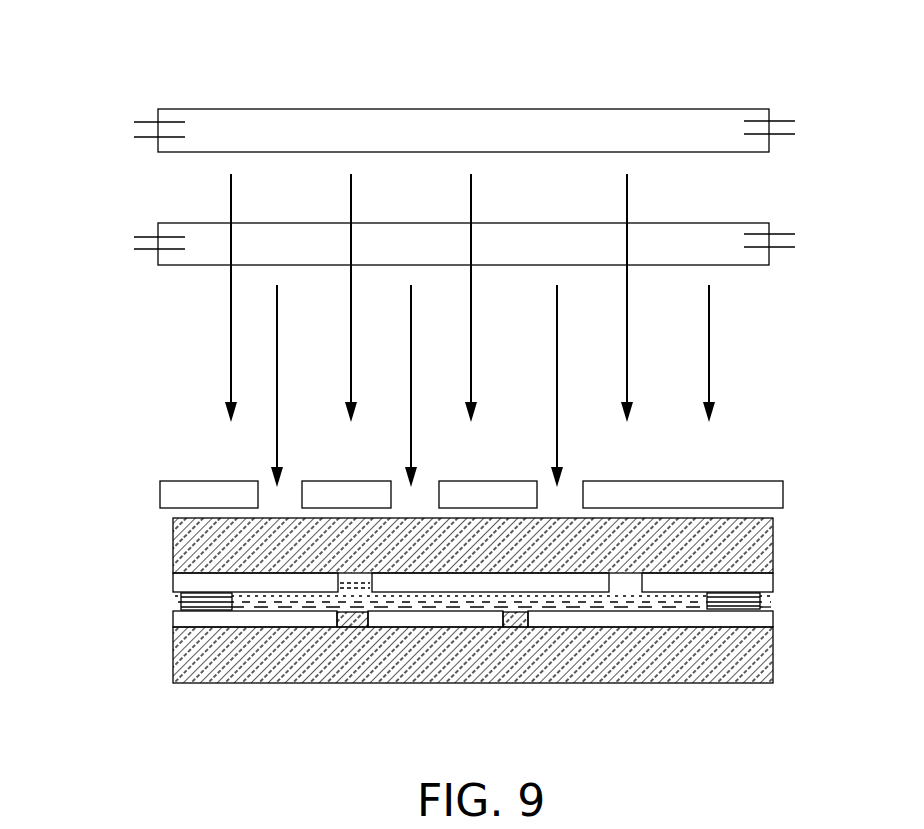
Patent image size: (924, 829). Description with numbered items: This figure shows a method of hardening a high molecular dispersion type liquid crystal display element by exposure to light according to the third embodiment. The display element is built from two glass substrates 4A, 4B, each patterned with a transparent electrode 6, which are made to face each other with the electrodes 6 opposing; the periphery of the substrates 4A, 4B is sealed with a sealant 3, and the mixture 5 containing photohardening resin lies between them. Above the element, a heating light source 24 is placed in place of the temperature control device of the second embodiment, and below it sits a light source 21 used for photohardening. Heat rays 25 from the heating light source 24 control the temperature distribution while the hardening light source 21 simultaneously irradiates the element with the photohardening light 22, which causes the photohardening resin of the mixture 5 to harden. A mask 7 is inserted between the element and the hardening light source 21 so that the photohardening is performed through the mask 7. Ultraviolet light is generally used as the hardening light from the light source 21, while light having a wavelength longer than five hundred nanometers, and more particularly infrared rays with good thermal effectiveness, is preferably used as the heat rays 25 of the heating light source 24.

The heating light source 24 is at (213, 109).
The light source 21 is at (757, 223).
The heat rays 25 is at (230, 202).
The light 22 is at (709, 343).
The mask 7 is at (760, 481).
The glass substrate 4A is at (693, 553).
The glass substrate 4B is at (710, 655).
The transparent electrodes 6 is at (172, 610).
The sealant 3 is at (762, 601).
The mixture 5 is at (522, 600).